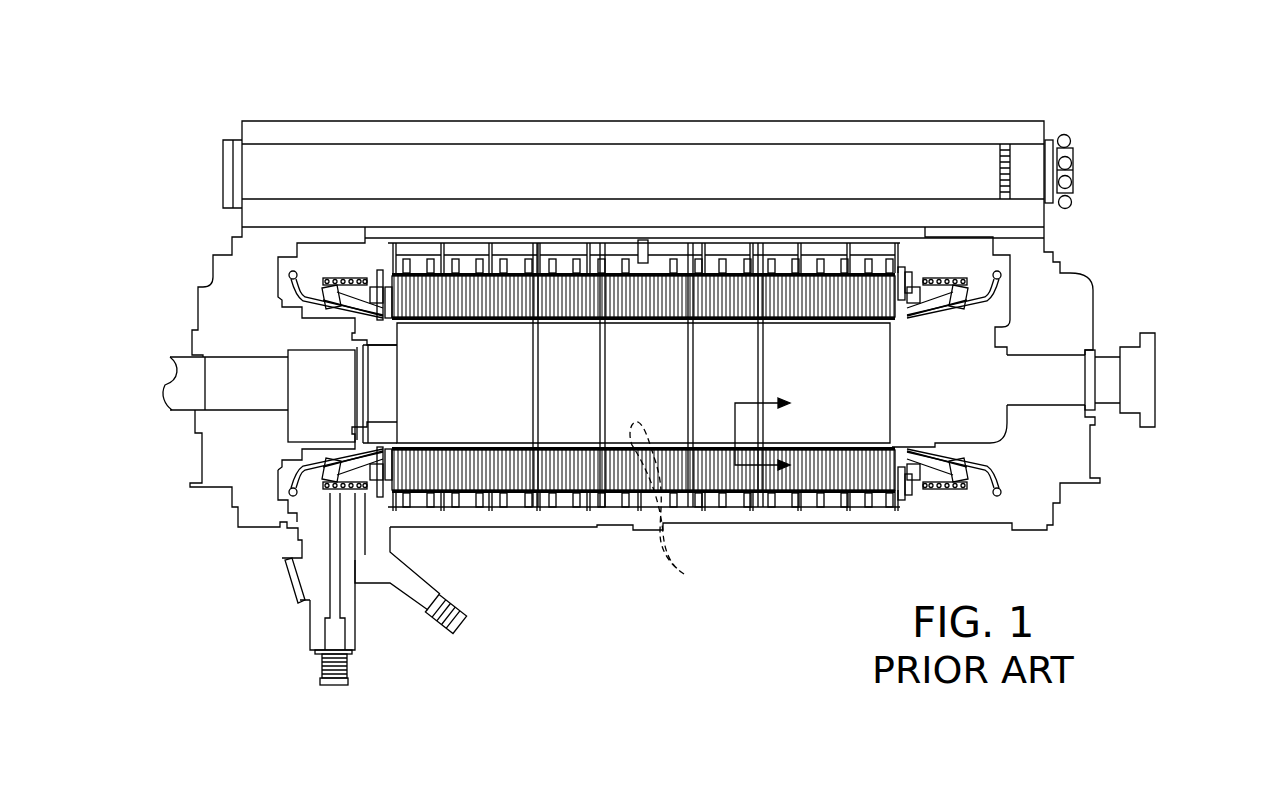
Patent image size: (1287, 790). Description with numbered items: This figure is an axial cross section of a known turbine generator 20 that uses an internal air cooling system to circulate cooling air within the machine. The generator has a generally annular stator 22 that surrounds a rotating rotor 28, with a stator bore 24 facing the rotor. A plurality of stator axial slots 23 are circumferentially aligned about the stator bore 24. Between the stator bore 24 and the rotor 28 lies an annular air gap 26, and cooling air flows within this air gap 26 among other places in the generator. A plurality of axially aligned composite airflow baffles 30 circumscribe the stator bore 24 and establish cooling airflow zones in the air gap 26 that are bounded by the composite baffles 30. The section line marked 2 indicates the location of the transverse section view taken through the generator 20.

The turbine generator 20 is at (1103, 203).
The stator 22 is at (657, 340).
The stator bore 24 is at (712, 327).
The air gap 26 is at (545, 317).
The rotor 28 is at (1143, 363).
The composite airflow baffle 30 is at (533, 317).
The stator axial slot 23 is at (676, 506).
The section view indicator 2 is at (762, 429).